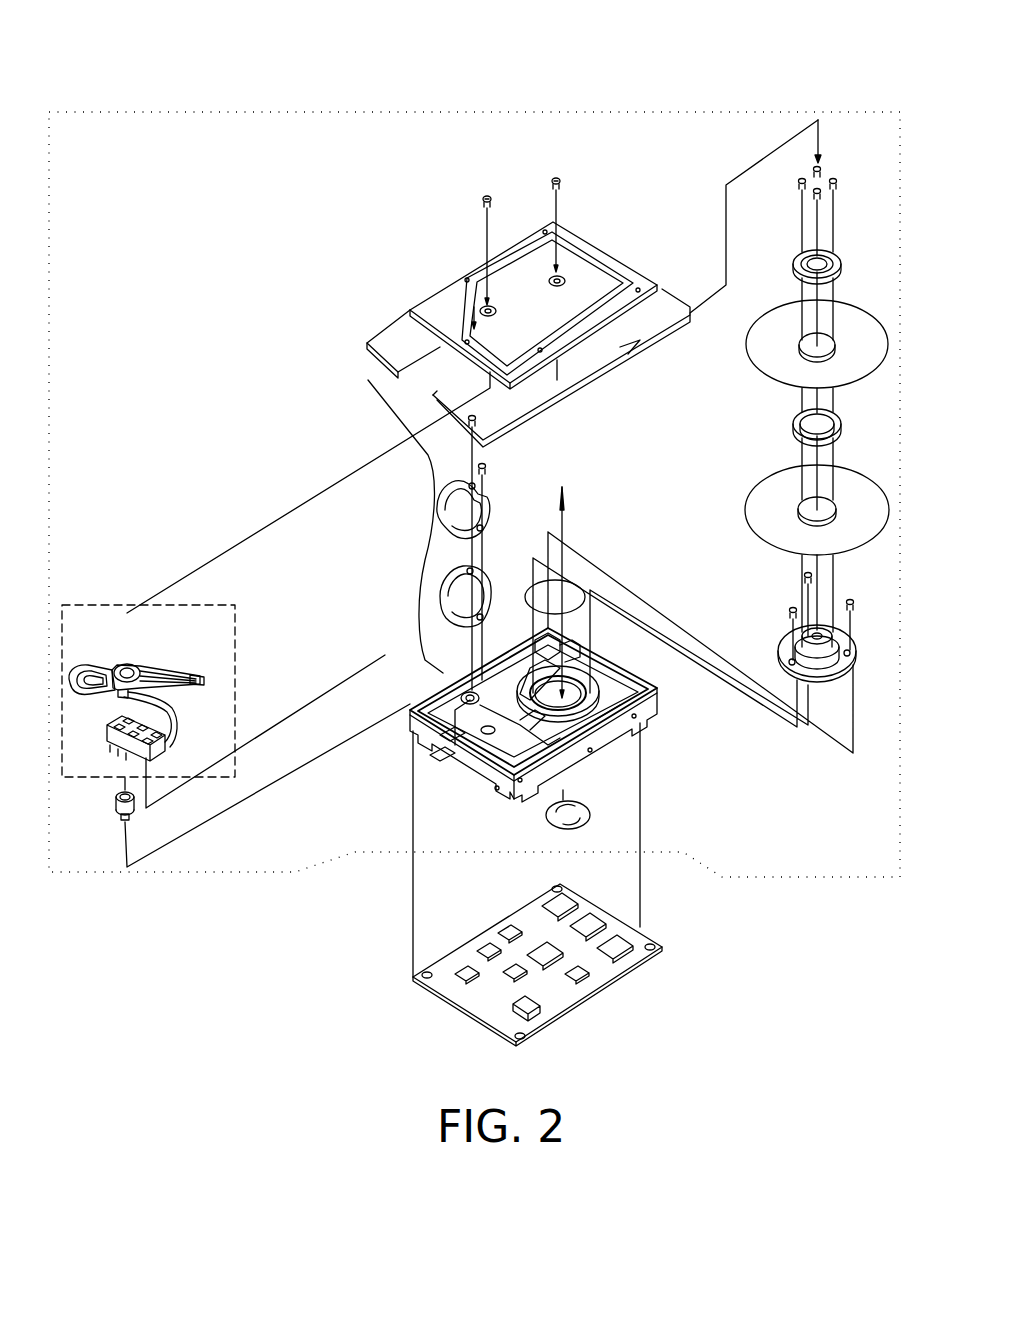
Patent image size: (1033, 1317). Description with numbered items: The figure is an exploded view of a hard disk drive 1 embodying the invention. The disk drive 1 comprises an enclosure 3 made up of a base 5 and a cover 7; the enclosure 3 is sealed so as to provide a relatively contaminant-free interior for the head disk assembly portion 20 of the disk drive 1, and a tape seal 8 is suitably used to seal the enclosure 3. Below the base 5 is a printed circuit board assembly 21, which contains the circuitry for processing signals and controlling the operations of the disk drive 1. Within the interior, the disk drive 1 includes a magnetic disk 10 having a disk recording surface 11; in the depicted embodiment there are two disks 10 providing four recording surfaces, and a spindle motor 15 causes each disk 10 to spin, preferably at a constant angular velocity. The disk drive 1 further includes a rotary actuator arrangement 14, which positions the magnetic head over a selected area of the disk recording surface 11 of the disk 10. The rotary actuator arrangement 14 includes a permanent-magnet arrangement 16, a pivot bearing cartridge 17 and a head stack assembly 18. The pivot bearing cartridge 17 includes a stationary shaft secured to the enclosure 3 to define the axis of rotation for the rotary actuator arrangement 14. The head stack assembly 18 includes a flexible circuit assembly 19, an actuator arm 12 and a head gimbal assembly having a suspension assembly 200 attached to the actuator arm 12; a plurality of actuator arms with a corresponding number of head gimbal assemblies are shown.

The disk drive 1 is at (318, 88).
The enclosure 3 is at (373, 382).
The base 5 is at (647, 720).
The cover 7 is at (437, 285).
The tape seal 8 is at (583, 377).
The magnetic disk 10 is at (755, 488).
The disk recording surface 11 is at (785, 337).
The actuator arm 12 is at (152, 676).
The rotary actuator arrangement 14 is at (423, 495).
The spindle motor 15 is at (783, 646).
The permanent-magnet arrangement 16 is at (492, 513).
The pivot bearing cartridge 17 is at (115, 812).
The head stack assembly 18 is at (98, 604).
The flexible circuit assembly 19 is at (172, 708).
The head disk assembly portion 20 is at (743, 877).
The printed circuit board assembly 21 is at (582, 1003).
The suspension assembly 200 is at (200, 678).